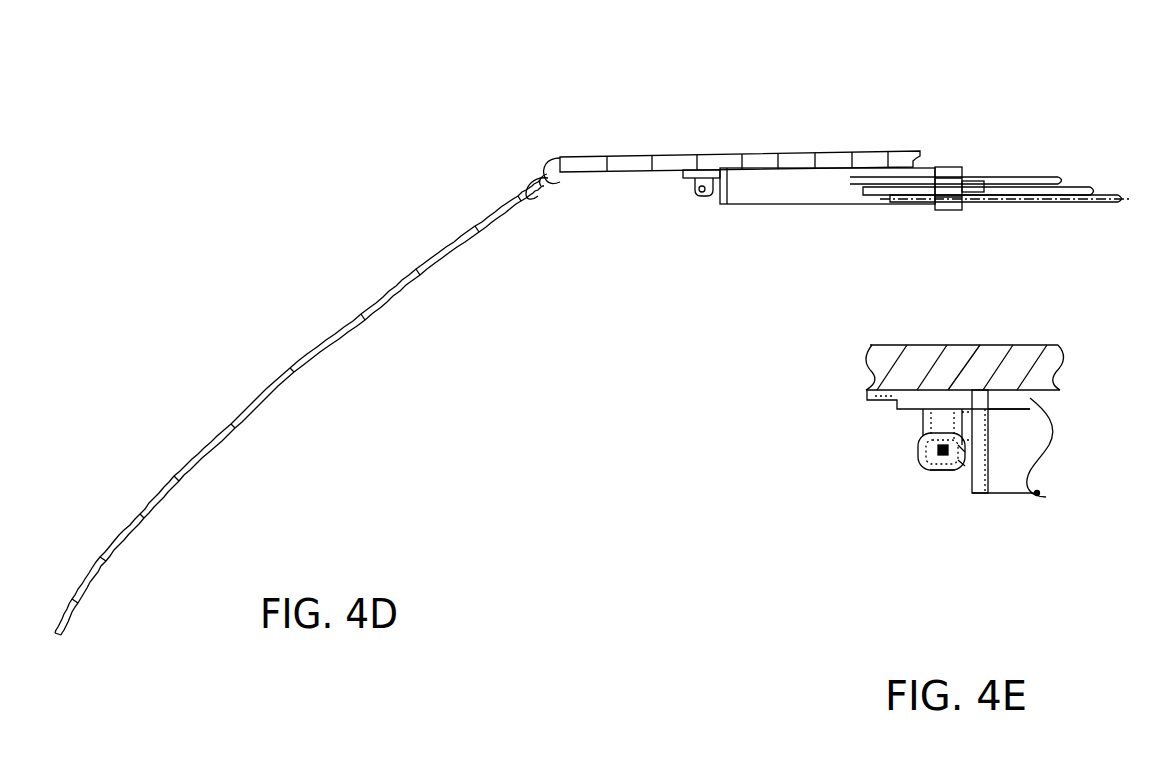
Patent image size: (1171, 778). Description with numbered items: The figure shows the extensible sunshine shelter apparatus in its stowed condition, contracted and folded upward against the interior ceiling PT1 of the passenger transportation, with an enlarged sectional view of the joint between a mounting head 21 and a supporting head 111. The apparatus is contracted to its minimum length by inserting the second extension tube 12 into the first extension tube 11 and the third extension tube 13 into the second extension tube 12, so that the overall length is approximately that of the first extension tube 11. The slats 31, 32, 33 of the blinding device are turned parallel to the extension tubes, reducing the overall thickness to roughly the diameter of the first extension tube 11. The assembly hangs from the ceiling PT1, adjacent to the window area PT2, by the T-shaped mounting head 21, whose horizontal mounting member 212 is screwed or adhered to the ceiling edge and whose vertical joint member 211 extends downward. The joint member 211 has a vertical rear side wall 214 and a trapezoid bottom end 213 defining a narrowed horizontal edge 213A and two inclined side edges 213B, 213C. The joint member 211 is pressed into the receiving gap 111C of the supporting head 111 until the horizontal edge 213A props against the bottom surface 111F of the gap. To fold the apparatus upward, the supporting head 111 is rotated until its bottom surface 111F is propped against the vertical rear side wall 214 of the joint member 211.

In FIG. 4D, the interior ceiling PT1 is at (783, 157).
In FIG. 4D, the window area PT2 is at (312, 353).
In FIG. 4D, the first extension tube 11 is at (813, 187).
In FIG. 4D, the second extension tube 12 is at (970, 186).
In FIG. 4D, the third extension tube 13 is at (985, 175).
In FIG. 4D, the mounting head 21 is at (683, 181).
In FIG. 4E, the mounting head 21 is at (905, 418).
In FIG. 4D, the slat 31 is at (1017, 177).
In FIG. 4D, the slat 32 is at (1057, 190).
In FIG. 4D, the slat 33 is at (1087, 200).
In FIG. 4E, the supporting head 111 is at (925, 487).
In FIG. 4E, the receiving gap 111C is at (958, 465).
In FIG. 4E, the bottom surface of the receiving gap 111F is at (960, 455).
In FIG. 4E, the vertical joint member 211 is at (950, 422).
In FIG. 4E, the horizontal mounting member 212 is at (868, 395).
In FIG. 4E, the trapezoid bottom end 213 is at (920, 453).
In FIG. 4E, the horizontal edge 213A is at (940, 470).
In FIG. 4E, the inclined side edge 213B is at (935, 452).
In FIG. 4E, the inclined side edge 213C is at (958, 448).
In FIG. 4E, the vertical rear side wall 214 is at (960, 423).